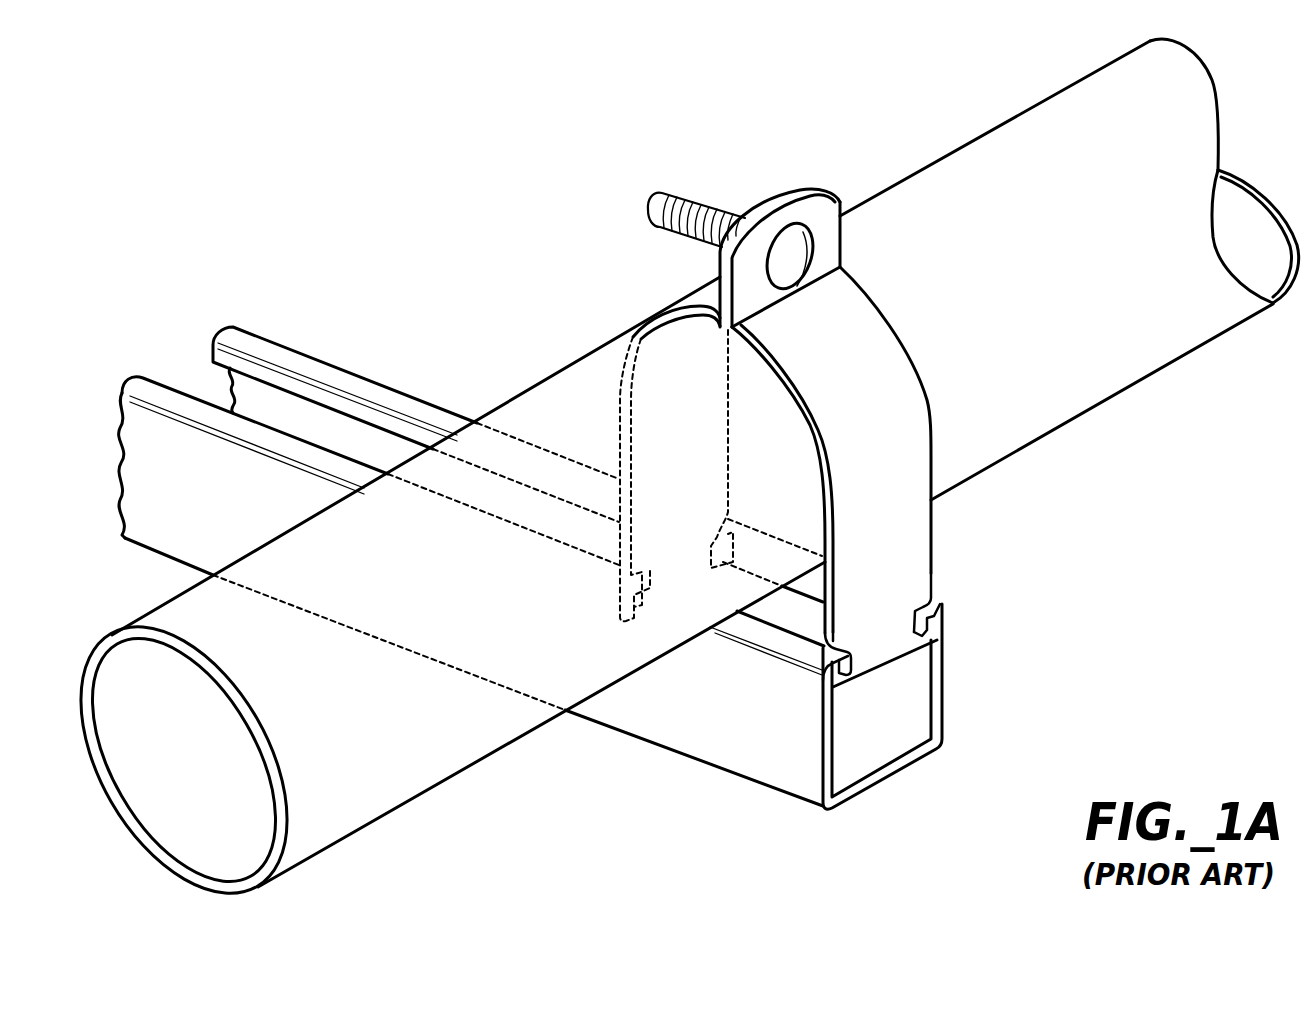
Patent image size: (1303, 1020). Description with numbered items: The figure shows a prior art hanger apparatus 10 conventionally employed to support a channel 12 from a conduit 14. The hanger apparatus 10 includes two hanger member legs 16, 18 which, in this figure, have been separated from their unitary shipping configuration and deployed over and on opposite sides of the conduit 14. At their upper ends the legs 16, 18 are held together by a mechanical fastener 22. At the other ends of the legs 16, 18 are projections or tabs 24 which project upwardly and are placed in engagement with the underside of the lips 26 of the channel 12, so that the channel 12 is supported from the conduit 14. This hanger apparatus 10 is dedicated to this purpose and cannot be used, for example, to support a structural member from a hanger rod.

The hanger apparatus 10 is at (806, 424).
The channel 12 is at (584, 568).
The conduit 14 is at (983, 146).
The hanger member leg 16 is at (640, 322).
The hanger member leg 18 is at (892, 366).
The mechanical fastener 22 is at (701, 206).
The projections or tabs 24 is at (937, 636).
The lips 26 is at (826, 650).